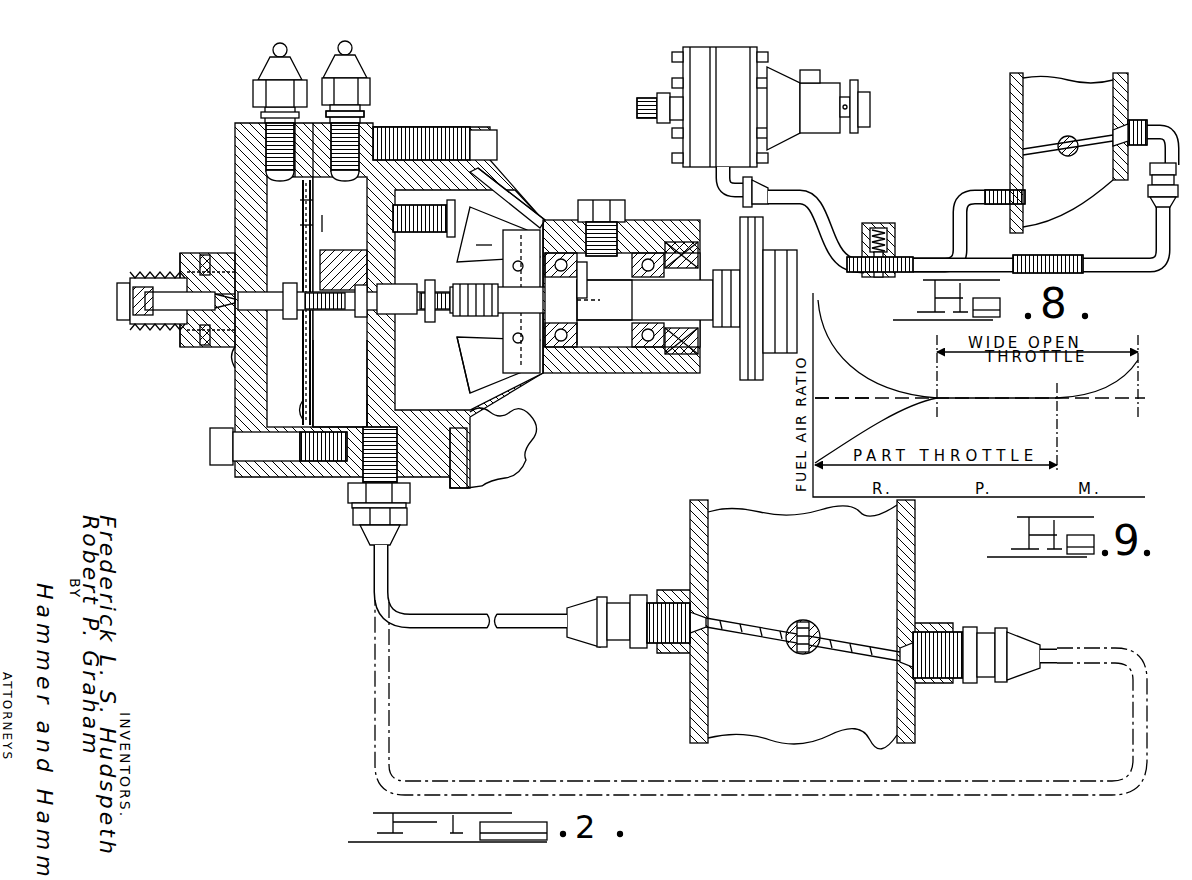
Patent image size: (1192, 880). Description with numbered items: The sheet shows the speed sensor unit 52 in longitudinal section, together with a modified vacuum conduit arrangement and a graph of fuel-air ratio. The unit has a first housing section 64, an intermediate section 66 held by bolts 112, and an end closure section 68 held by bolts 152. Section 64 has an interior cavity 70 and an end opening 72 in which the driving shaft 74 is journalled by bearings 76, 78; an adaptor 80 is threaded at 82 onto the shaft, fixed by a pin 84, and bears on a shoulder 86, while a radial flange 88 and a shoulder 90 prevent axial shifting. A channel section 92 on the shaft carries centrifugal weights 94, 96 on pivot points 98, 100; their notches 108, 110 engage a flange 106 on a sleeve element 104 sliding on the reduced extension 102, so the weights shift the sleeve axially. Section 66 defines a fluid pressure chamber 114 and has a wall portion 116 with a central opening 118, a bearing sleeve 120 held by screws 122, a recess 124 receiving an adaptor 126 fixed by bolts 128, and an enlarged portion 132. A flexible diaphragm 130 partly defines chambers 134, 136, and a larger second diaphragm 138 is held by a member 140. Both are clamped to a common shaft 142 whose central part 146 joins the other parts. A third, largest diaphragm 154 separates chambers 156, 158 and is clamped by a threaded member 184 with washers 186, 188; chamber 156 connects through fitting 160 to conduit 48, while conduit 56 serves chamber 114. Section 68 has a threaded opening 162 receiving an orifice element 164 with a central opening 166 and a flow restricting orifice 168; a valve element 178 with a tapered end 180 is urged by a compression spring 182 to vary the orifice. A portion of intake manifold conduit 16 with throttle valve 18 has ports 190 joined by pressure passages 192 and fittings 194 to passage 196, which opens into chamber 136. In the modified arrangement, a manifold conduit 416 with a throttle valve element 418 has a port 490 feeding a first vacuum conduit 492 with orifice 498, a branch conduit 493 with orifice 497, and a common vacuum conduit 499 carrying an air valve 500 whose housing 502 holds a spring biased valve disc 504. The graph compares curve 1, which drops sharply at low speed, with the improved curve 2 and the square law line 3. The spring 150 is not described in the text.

In FIG. 2, the conduit 48 is at (268, 52).
In FIG. 2, the conduit 56 is at (352, 60).
In FIG. 2, the spring 150 is at (358, 78).
In FIG. 2, the fluid fitting 160 is at (253, 92).
In FIG. 2, the intermediate housing section 66 is at (377, 143).
In FIG. 2, the speed sensor unit 52 is at (442, 124).
In FIG. 2, the bolts 112 is at (480, 127).
In FIG. 2, the fluid pressure chamber 156 is at (273, 188).
In FIG. 2, the washer 188 is at (304, 212).
In FIG. 2, the washer 186 is at (304, 230).
In FIG. 2, the fluid pressure chamber 114 is at (322, 215).
In FIG. 2, the screws 122 is at (323, 232).
In FIG. 2, the wall portion 116 is at (335, 252).
In FIG. 2, the recess 124 is at (400, 205).
In FIG. 2, the bolts 128 is at (447, 208).
In FIG. 2, the fluid flow restricting orifice 168 is at (225, 234).
In FIG. 2, the tapered end 180 is at (192, 262).
In FIG. 2, the central opening 166 is at (170, 276).
In FIG. 2, the compression spring 182 is at (123, 300).
In FIG. 2, the valve element 178 is at (165, 323).
In FIG. 2, the orifice element 164 is at (185, 340).
In FIG. 2, the central threaded opening 162 is at (232, 345).
In FIG. 2, the end closure section 68 is at (245, 400).
In FIG. 2, the common shaft 142 is at (303, 290).
In FIG. 2, the fluid chamber 134 is at (397, 284).
In FIG. 2, the fluid chamber 136 is at (428, 278).
In FIG. 2, the centrifugal weight 96 is at (498, 234).
In FIG. 2, the pivot point 100 is at (485, 256).
In FIG. 2, the sleeve element 104 is at (478, 284).
In FIG. 2, the reduced diameter extension 102 is at (513, 311).
In FIG. 2, the flange 106 is at (475, 363).
In FIG. 2, the pivot point 98 is at (498, 365).
In FIG. 2, the centrifugal weight 94 is at (507, 308).
In FIG. 2, the channel section 92 is at (492, 378).
In FIG. 2, the shaft part 146 is at (397, 299).
In FIG. 2, the threaded member 184 is at (303, 330).
In FIG. 2, the bearing sleeve 120 is at (303, 355).
In FIG. 2, the flexible diaphragm 154 is at (302, 402).
In FIG. 2, the central opening 118 is at (340, 383).
In FIG. 2, the enlarged diameter portion 132 is at (351, 383).
In FIG. 2, the fluid pressure chamber 158 is at (340, 407).
In FIG. 2, the passage 196 is at (378, 410).
In FIG. 2, the bolts 152 is at (258, 465).
In FIG. 2, the flexible diaphragm 130 is at (403, 478).
In FIG. 2, the second flexible diaphragm 138 is at (468, 437).
In FIG. 2, the adaptor 126 is at (467, 462).
In FIG. 2, the member 140 is at (528, 414).
In FIG. 2, the interior cavity 70 is at (490, 192).
In FIG. 2, the first housing section 64 is at (527, 198).
In FIG. 2, the radial flange 88 is at (561, 257).
In FIG. 2, the bearing 78 is at (625, 255).
In FIG. 2, the threaded connection 82 is at (698, 262).
In FIG. 2, the adaptor 80 is at (765, 224).
In FIG. 2, the notch 110 is at (579, 285).
In FIG. 2, the notch 108 is at (562, 322).
In FIG. 2, the shoulder 90 is at (604, 297).
In FIG. 2, the bearing 76 is at (592, 302).
In FIG. 2, the driving shaft 74 is at (632, 311).
In FIG. 2, the shoulder 86 is at (700, 350).
In FIG. 2, the pin 84 is at (760, 378).
In FIG. 2, the end opening 72 is at (625, 373).
In FIG. 2, the intake manifold conduit 16 is at (915, 530).
In FIG. 2, the throttle valve 18 is at (830, 635).
In FIG. 2, the ports 190 is at (712, 620).
In FIG. 2, the fittings 194 is at (638, 595).
In FIG. 2, the pressure passages 192 is at (510, 615).
In FIG. 8, the intake manifold conduit 416 is at (1113, 80).
In FIG. 8, the throttle valve element 418 is at (1065, 140).
In FIG. 8, the port 490 is at (1122, 132).
In FIG. 8, the orifice 497 is at (1003, 190).
In FIG. 8, the branch conduit 493 is at (954, 230).
In FIG. 8, the precalibrated orifice 498 is at (1048, 256).
In FIG. 8, the first vacuum conduit 492 is at (1152, 248).
In FIG. 8, the common vacuum conduit 499 is at (822, 205).
In FIG. 8, the valve disc 504 is at (882, 226).
In FIG. 8, the air valve 500 is at (896, 230).
In FIG. 8, the housing 502 is at (895, 246).
In FIG. 9, the curve 1 is at (866, 428).
In FIG. 9, the curve 2 is at (848, 372).
In FIG. 9, the horizontal line 3 is at (831, 400).